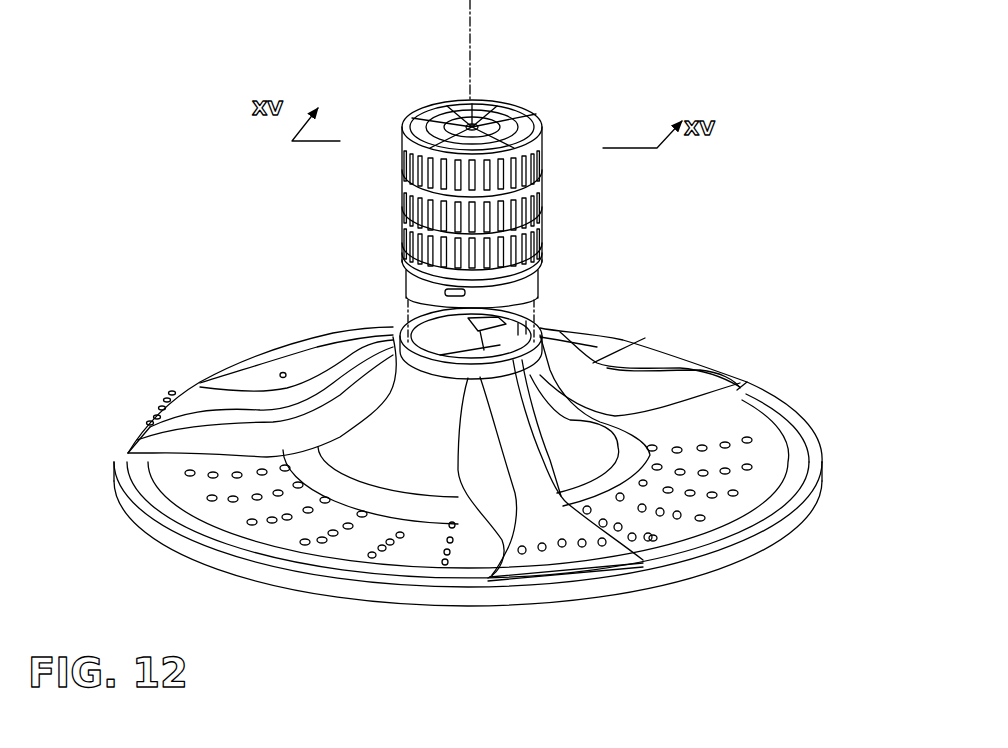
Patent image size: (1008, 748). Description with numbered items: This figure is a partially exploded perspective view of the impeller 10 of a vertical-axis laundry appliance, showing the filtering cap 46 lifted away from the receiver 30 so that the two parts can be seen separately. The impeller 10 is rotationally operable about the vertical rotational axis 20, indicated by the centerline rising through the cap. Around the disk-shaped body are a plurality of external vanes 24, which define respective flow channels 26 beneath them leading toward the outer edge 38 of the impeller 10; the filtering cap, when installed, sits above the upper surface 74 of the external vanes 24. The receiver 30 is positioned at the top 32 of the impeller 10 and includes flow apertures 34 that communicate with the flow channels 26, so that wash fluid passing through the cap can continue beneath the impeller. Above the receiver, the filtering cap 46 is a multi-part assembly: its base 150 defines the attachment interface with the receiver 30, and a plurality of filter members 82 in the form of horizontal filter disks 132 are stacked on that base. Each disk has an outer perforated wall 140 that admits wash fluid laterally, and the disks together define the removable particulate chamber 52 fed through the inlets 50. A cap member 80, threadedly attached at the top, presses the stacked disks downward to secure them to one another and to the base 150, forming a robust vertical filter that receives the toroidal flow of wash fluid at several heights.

The impeller 10 is at (188, 355).
The vertical rotational axis 20 is at (469, 50).
The external vanes 24 is at (630, 362).
The flow channels 26 is at (582, 395).
The receiver 30 is at (396, 332).
The top 32 is at (540, 326).
The flow apertures 34 is at (537, 417).
The outer edge 38 is at (120, 493).
The filtering cap 46 is at (574, 96).
The inlets 50 is at (432, 108).
The removable particulate chamber 52 is at (400, 186).
The upper surface 74 is at (724, 430).
The cap member 80 is at (480, 103).
The filter members 82 is at (548, 157).
The horizontal filter disks 132 is at (404, 222).
The outer perforated wall 140 is at (540, 240).
The base 150 is at (405, 300).